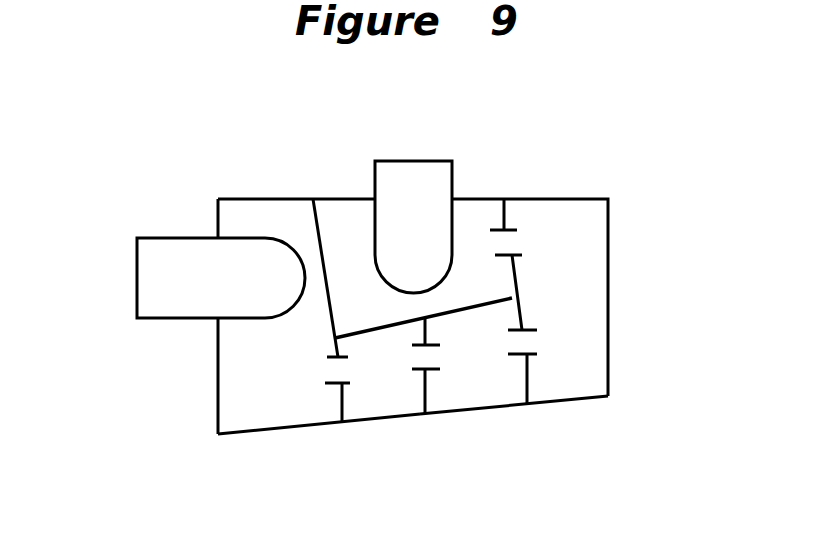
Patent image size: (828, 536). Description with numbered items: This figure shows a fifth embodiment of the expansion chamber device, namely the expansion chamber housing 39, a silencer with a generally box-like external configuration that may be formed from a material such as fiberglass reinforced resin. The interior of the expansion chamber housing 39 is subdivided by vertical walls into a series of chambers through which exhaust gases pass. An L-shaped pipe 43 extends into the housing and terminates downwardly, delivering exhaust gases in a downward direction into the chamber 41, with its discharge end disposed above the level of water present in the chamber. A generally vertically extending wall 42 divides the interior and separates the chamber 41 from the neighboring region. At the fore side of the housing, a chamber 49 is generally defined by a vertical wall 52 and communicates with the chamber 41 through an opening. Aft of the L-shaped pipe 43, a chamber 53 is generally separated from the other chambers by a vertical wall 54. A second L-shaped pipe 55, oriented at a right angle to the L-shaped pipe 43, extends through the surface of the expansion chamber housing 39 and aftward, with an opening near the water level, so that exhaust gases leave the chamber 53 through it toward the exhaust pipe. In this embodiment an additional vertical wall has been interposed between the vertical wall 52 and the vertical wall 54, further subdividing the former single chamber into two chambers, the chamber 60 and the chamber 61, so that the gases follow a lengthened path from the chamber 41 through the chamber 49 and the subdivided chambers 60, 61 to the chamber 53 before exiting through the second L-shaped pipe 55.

The expansion chamber housing 39 is at (608, 205).
The chamber 41 is at (378, 318).
The vertically extending wall 42 is at (455, 312).
The L-shaped pipe 43 is at (412, 161).
The chamber 49 is at (597, 355).
The vertical wall 52 is at (513, 280).
The chamber 53 is at (293, 404).
The vertical wall 54 is at (318, 238).
The second L-shaped pipe 55 is at (165, 318).
The chamber 60 is at (392, 408).
The chamber 61 is at (507, 390).